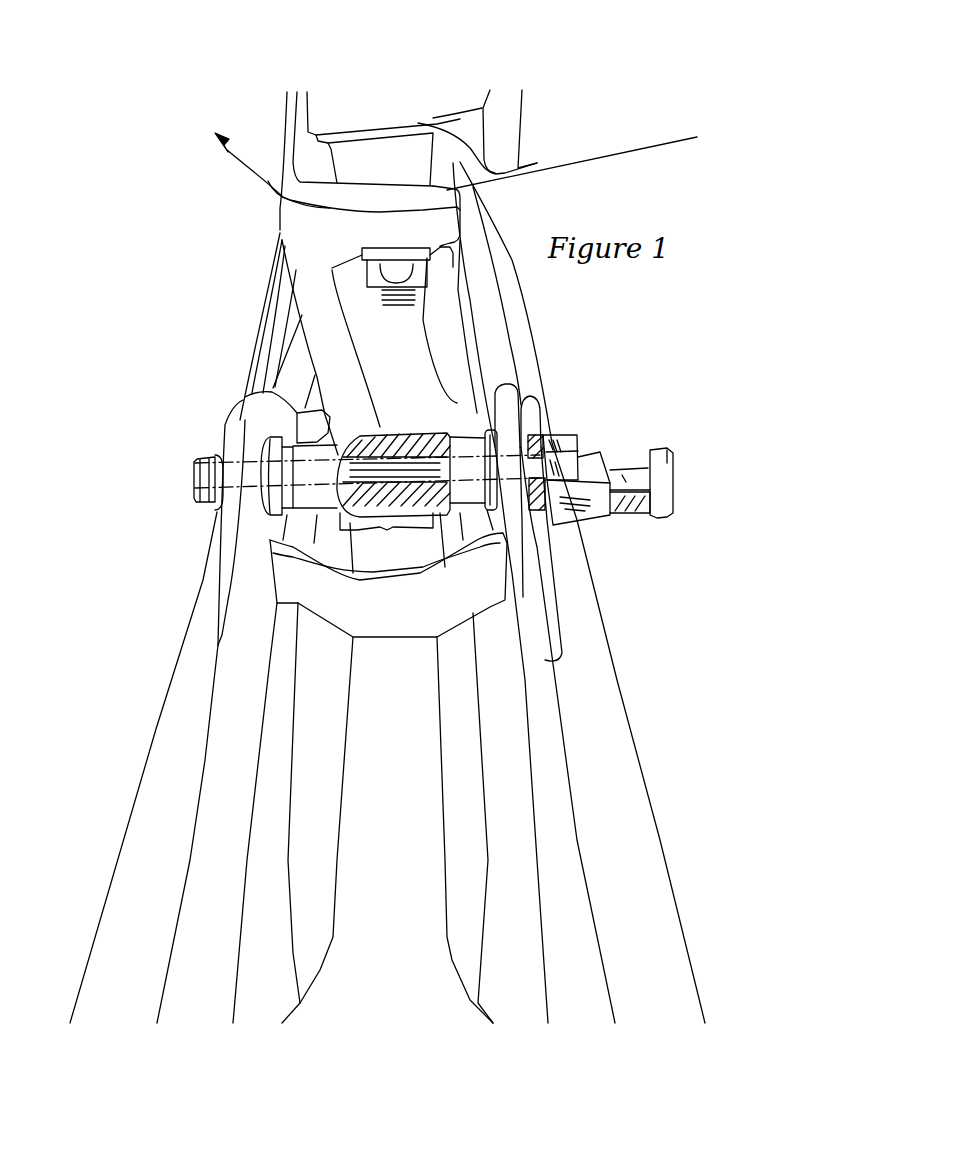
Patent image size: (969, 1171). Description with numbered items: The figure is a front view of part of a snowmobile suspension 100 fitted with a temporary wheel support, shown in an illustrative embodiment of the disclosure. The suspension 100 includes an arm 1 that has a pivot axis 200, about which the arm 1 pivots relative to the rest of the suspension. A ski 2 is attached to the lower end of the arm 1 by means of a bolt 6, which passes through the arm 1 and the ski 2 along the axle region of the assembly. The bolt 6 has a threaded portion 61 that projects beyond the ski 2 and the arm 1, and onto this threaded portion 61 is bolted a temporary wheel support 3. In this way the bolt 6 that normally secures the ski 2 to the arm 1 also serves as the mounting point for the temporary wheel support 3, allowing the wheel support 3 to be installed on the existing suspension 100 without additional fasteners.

The snowmobile suspension 100 is at (241, 101).
The pivot axis 200 is at (457, 207).
The arm 1 is at (316, 241).
The ski 2 is at (415, 768).
The temporary wheel support 3 is at (628, 470).
The bolt 6 is at (245, 397).
The threaded portion 61 is at (563, 480).